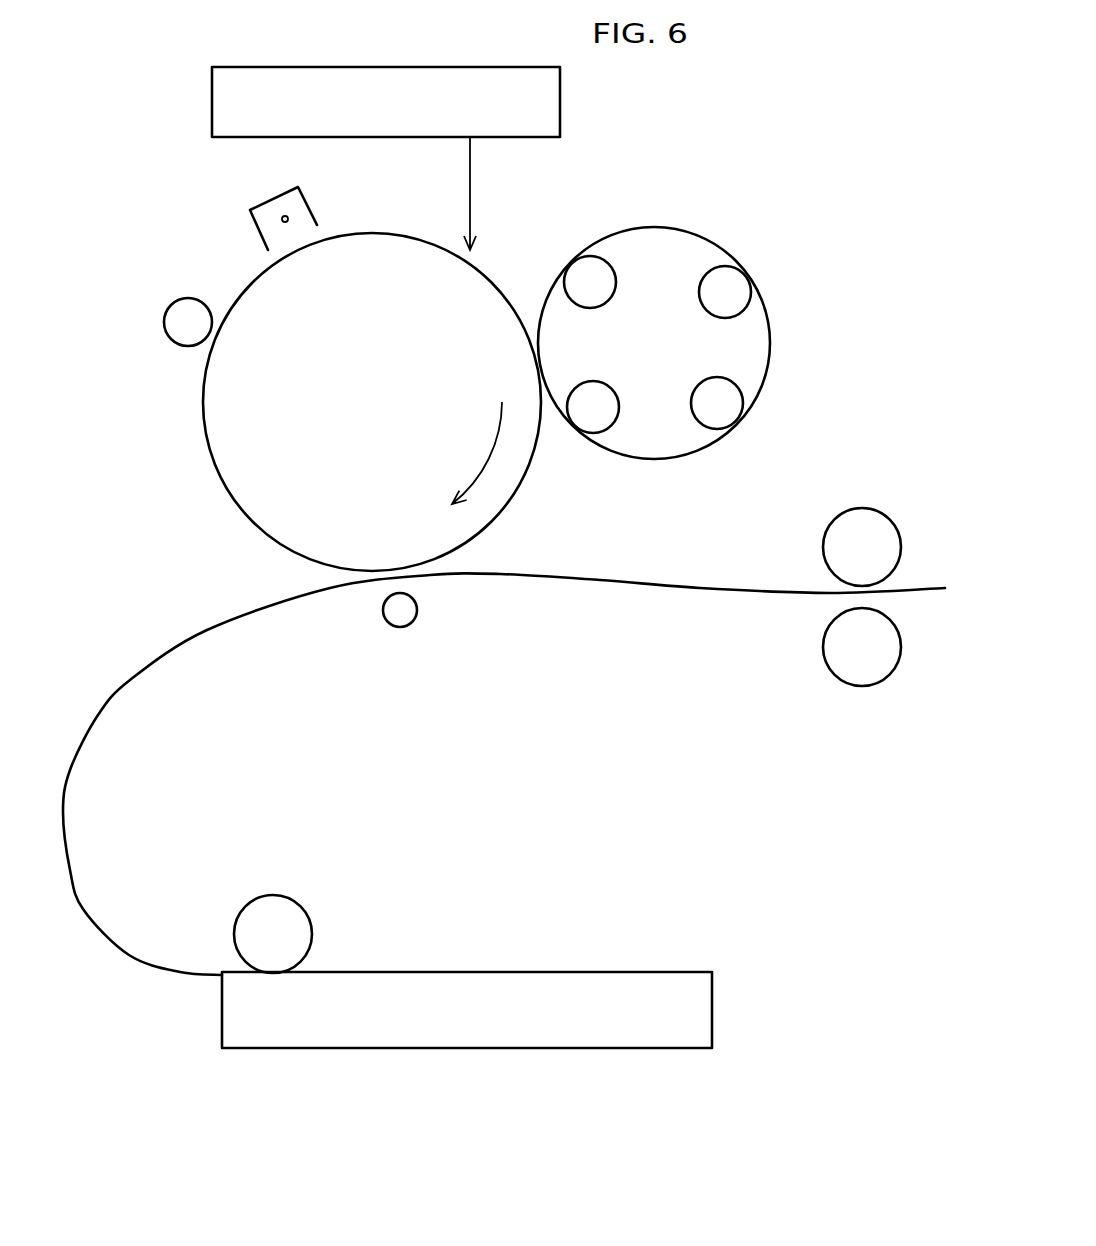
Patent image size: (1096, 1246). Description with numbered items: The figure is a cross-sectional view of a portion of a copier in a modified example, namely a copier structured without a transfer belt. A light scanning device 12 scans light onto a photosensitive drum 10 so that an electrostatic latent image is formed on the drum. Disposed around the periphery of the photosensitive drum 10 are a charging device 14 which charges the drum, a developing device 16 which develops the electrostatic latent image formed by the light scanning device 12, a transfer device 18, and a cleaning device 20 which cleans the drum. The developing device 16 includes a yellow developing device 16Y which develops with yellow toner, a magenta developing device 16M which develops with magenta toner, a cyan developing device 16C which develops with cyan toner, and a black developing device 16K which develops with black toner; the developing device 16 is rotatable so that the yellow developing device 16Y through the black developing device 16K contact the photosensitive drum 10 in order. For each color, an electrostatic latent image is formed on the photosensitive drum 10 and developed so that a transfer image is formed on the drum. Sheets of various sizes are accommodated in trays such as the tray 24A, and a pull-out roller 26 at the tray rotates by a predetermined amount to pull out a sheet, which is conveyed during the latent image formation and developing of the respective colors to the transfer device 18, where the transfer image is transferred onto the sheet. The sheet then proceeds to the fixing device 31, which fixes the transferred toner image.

The photosensitive drum 10 is at (527, 468).
The light scanning device 12 is at (560, 108).
The charging device 14 is at (257, 208).
The developing device 16 is at (668, 329).
The yellow developing device 16Y is at (617, 282).
The magenta developing device 16M is at (724, 318).
The cyan developing device 16C is at (695, 415).
The black developing device 16K is at (607, 385).
The transfer device 18 is at (416, 614).
The cleaning device 20 is at (184, 298).
The tray 24A is at (712, 972).
The pull-out roller 26 is at (306, 912).
The fixing device 31 is at (868, 491).